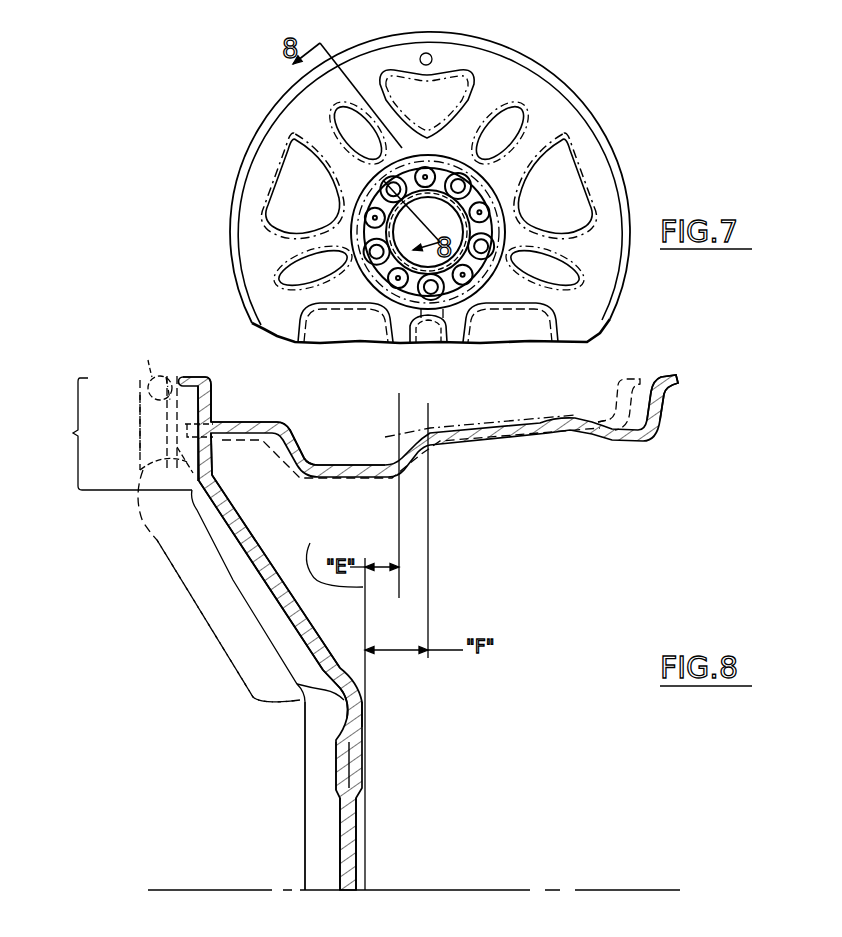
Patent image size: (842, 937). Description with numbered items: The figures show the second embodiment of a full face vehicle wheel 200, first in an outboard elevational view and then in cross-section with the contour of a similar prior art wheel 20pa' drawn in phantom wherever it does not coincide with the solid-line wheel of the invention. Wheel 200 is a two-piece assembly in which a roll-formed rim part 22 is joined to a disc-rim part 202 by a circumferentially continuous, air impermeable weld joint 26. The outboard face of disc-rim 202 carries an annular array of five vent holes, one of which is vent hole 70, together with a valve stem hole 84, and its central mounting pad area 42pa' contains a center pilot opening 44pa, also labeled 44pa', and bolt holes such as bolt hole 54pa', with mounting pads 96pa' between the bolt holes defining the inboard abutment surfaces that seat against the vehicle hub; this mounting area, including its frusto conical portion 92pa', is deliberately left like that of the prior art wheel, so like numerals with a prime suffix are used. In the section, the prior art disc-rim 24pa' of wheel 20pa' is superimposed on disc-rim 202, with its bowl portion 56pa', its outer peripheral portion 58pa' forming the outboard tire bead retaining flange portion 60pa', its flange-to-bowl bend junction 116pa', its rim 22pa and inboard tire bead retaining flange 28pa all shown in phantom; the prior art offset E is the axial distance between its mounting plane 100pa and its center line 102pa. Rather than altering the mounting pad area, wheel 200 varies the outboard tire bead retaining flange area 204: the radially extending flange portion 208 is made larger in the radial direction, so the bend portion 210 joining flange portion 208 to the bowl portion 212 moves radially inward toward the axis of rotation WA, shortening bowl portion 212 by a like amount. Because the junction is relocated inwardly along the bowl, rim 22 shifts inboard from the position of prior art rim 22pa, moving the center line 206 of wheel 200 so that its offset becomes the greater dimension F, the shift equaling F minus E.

In FIG. 7, the wheel 200 is at (240, 106).
In FIG. 8, the wheel 200 is at (230, 530).
In FIG. 7, the vent hole 70 is at (467, 92).
In FIG. 7, the valve stem hole 84 is at (433, 56).
In FIG. 7, the center pilot opening 44pa is at (326, 236).
In FIG. 8, the disc-rim part 202 is at (195, 376).
In FIG. 8, the radially extending flange portion 208 is at (215, 396).
In FIG. 8, the weld joint 26 is at (218, 426).
In FIG. 8, the bend portion 210 is at (215, 480).
In FIG. 8, the bowl portion 212 is at (258, 620).
In FIG. 8, the outboard tire bead retaining flange area 204 is at (108, 434).
In FIG. 8, the prior art wheel 20pa' is at (200, 492).
In FIG. 8, the outboard tire bead retaining flange portion 60pa' is at (117, 367).
In FIG. 8, the disc-rim part 24pa' is at (173, 363).
In FIG. 8, the outer peripheral portion 58pa' is at (112, 425).
In FIG. 8, the flange-to-bowl bend junction 116pa' is at (140, 460).
In FIG. 8, the bowl portion 56pa' is at (220, 621).
In FIG. 8, the center line 102pa is at (398, 483).
In FIG. 8, the mounting plane 100pa is at (427, 478).
In FIG. 8, the center line 206 is at (429, 559).
In FIG. 8, the frusto conical portion 92pa' is at (380, 694).
In FIG. 8, the mounting pads 96pa' is at (403, 714).
In FIG. 8, the bolt hole 54pa' is at (384, 765).
In FIG. 8, the mounting ring portion 42pa' is at (267, 796).
In FIG. 8, the center pilot opening 44pa' is at (391, 842).
In FIG. 8, the rim part 22 is at (676, 373).
In FIG. 8, the rim 22pa is at (641, 372).
In FIG. 8, the inboard tire bead retaining flange 28pa is at (615, 387).
In FIG. 8, the axis of rotation WA is at (583, 888).